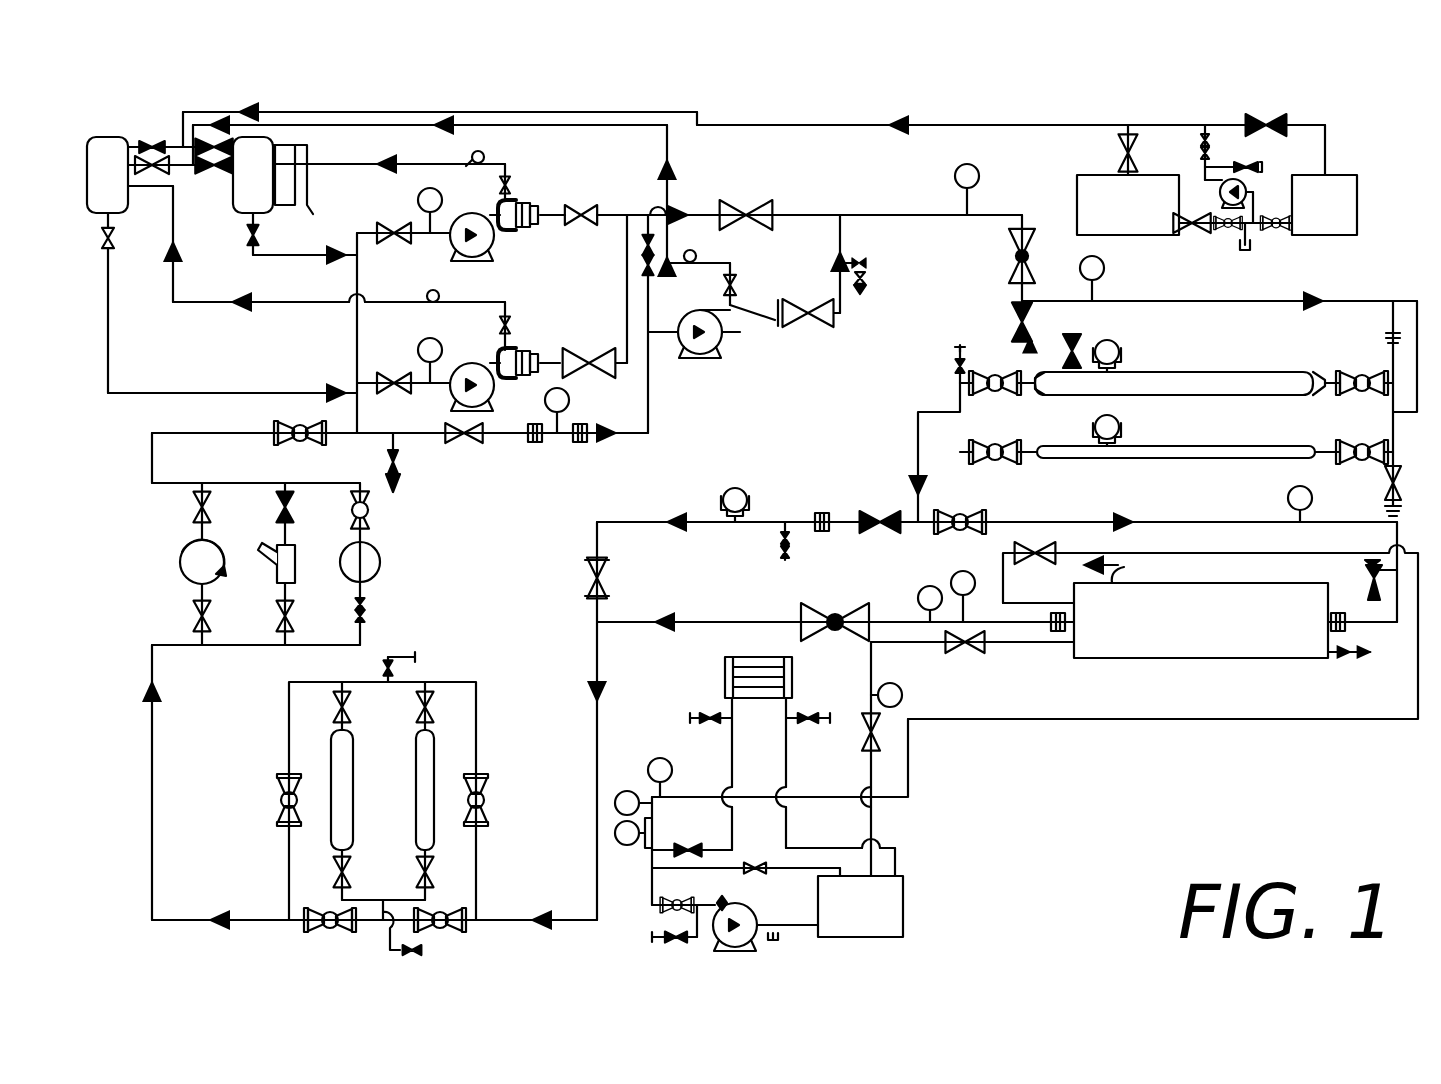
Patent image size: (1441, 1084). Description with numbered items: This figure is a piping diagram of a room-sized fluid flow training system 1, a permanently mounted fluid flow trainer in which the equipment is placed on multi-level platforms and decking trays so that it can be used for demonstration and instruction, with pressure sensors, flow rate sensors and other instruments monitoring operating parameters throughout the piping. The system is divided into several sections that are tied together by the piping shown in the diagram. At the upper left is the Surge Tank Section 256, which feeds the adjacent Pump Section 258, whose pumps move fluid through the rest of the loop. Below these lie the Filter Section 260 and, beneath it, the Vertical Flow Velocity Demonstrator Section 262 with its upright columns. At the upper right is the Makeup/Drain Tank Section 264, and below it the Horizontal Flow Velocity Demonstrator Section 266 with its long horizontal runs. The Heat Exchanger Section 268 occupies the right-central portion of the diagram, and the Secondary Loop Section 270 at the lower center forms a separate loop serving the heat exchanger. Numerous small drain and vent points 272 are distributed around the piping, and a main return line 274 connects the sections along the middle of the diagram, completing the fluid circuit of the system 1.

The fluid flow training system 1 is at (1365, 92).
The Surge Tank Section 256 is at (144, 110).
The Pump Section 258 is at (498, 470).
The Filter Section 260 is at (455, 606).
The Vertical Flow Velocity Demonstrator Section 262 is at (122, 887).
The Makeup/Drain Tank Section 264 is at (1376, 150).
The Horizontal Flow Velocity Demonstrator Section 266 is at (1366, 276).
The Heat Exchanger Section 268 is at (1242, 766).
The Secondary Loop Section 270 is at (975, 876).
The drain valve 272 is at (430, 522).
The return line 274 is at (798, 480).